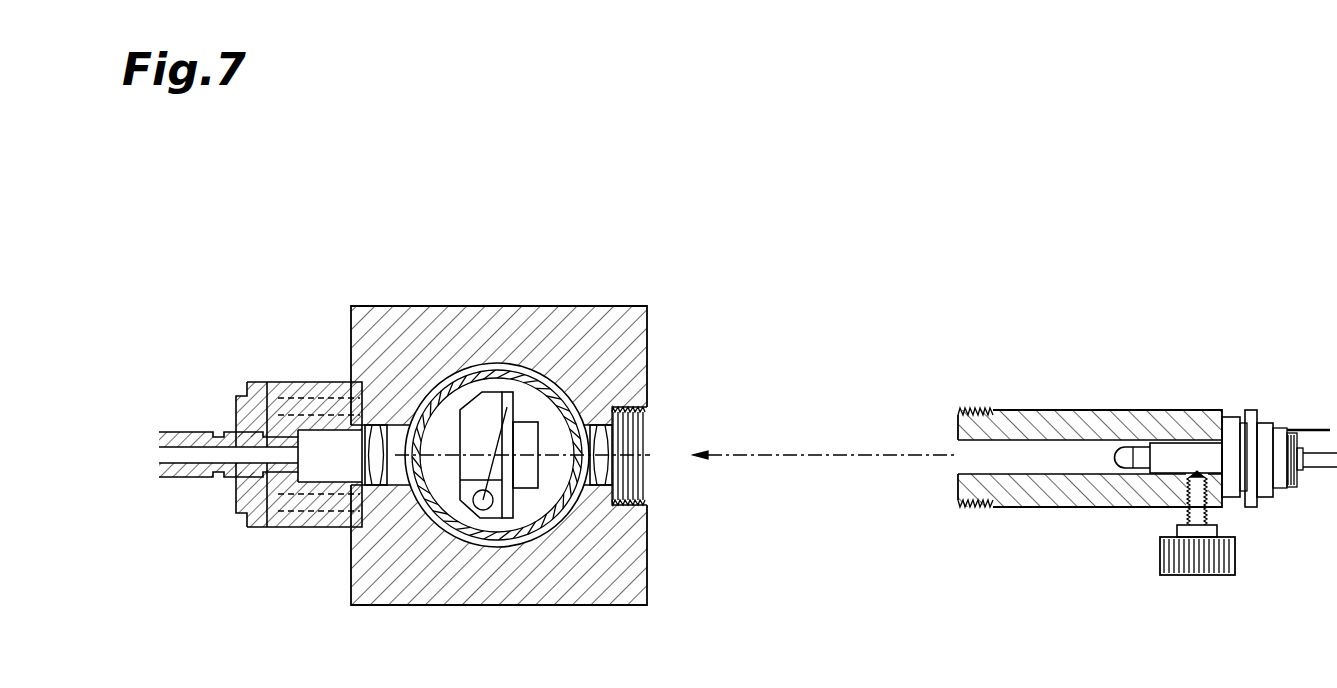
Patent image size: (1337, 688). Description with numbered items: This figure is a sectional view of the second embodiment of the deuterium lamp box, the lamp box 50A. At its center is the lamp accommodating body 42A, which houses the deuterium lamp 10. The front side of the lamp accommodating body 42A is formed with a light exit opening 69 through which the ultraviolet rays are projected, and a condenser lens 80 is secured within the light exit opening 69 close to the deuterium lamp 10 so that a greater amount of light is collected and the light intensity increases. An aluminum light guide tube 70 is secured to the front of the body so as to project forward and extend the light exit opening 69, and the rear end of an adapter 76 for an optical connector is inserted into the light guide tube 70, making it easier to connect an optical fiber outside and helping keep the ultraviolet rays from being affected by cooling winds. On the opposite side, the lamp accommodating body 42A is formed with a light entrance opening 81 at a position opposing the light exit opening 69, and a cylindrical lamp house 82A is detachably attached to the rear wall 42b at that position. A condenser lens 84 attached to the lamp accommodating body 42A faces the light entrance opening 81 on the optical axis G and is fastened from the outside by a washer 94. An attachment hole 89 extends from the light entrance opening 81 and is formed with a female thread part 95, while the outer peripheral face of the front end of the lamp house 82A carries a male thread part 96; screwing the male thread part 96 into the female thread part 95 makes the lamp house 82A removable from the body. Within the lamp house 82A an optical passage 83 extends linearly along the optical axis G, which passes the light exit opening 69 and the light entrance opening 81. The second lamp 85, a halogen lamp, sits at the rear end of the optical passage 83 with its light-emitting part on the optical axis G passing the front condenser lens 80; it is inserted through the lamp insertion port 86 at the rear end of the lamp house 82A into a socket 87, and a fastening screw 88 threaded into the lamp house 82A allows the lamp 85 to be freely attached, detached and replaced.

The lamp box 50A is at (462, 433).
The lamp accommodating body 42A is at (485, 310).
The rear wall 42b is at (647, 330).
The condenser lens 80 is at (388, 427).
The condenser lens 84 is at (597, 425).
The washer 94 is at (612, 410).
The female thread part 95 is at (647, 483).
The attachment hole 89 is at (650, 428).
The light exit opening 69 is at (397, 473).
The deuterium lamp 10 is at (497, 537).
The optical axis G is at (555, 455).
The light entrance opening 81 is at (590, 472).
The light guide tube 70 is at (297, 390).
The adapter 76 is at (177, 433).
The lamp house 82A is at (1147, 433).
The optical passage 83 is at (1065, 467).
The male thread part 96 is at (978, 408).
The second lamp 85 is at (1142, 453).
The socket 87 is at (1192, 453).
The lamp insertion port 86 is at (1227, 453).
The fastening screw 88 is at (1177, 513).